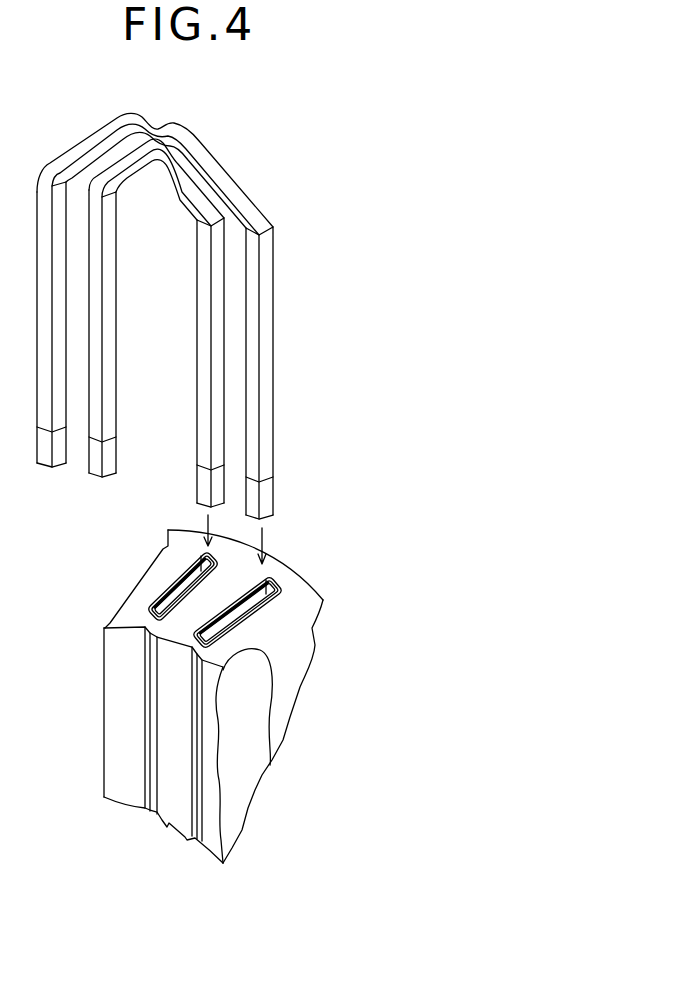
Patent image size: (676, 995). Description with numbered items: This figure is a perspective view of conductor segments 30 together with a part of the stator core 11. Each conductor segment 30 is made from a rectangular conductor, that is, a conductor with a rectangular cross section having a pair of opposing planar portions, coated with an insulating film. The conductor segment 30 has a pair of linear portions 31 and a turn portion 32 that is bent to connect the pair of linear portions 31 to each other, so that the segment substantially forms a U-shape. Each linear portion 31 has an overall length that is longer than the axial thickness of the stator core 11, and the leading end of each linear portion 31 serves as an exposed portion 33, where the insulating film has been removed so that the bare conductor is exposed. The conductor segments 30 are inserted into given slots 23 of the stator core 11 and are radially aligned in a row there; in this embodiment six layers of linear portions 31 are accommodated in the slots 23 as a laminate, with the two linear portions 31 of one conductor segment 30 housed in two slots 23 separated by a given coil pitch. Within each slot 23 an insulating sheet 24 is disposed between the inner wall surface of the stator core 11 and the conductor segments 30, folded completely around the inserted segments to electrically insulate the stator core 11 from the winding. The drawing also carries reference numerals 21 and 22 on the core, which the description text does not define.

The stator core 11 is at (269, 676).
The stator core 21 is at (269, 696).
The teeth 22 is at (192, 620).
The slot 23 is at (283, 587).
The insulating sheet 24 is at (288, 600).
The conductor segment 30 is at (201, 298).
The linear portion 31 is at (213, 383).
The turn portion 32 is at (221, 161).
The exposed portion 33 is at (266, 492).